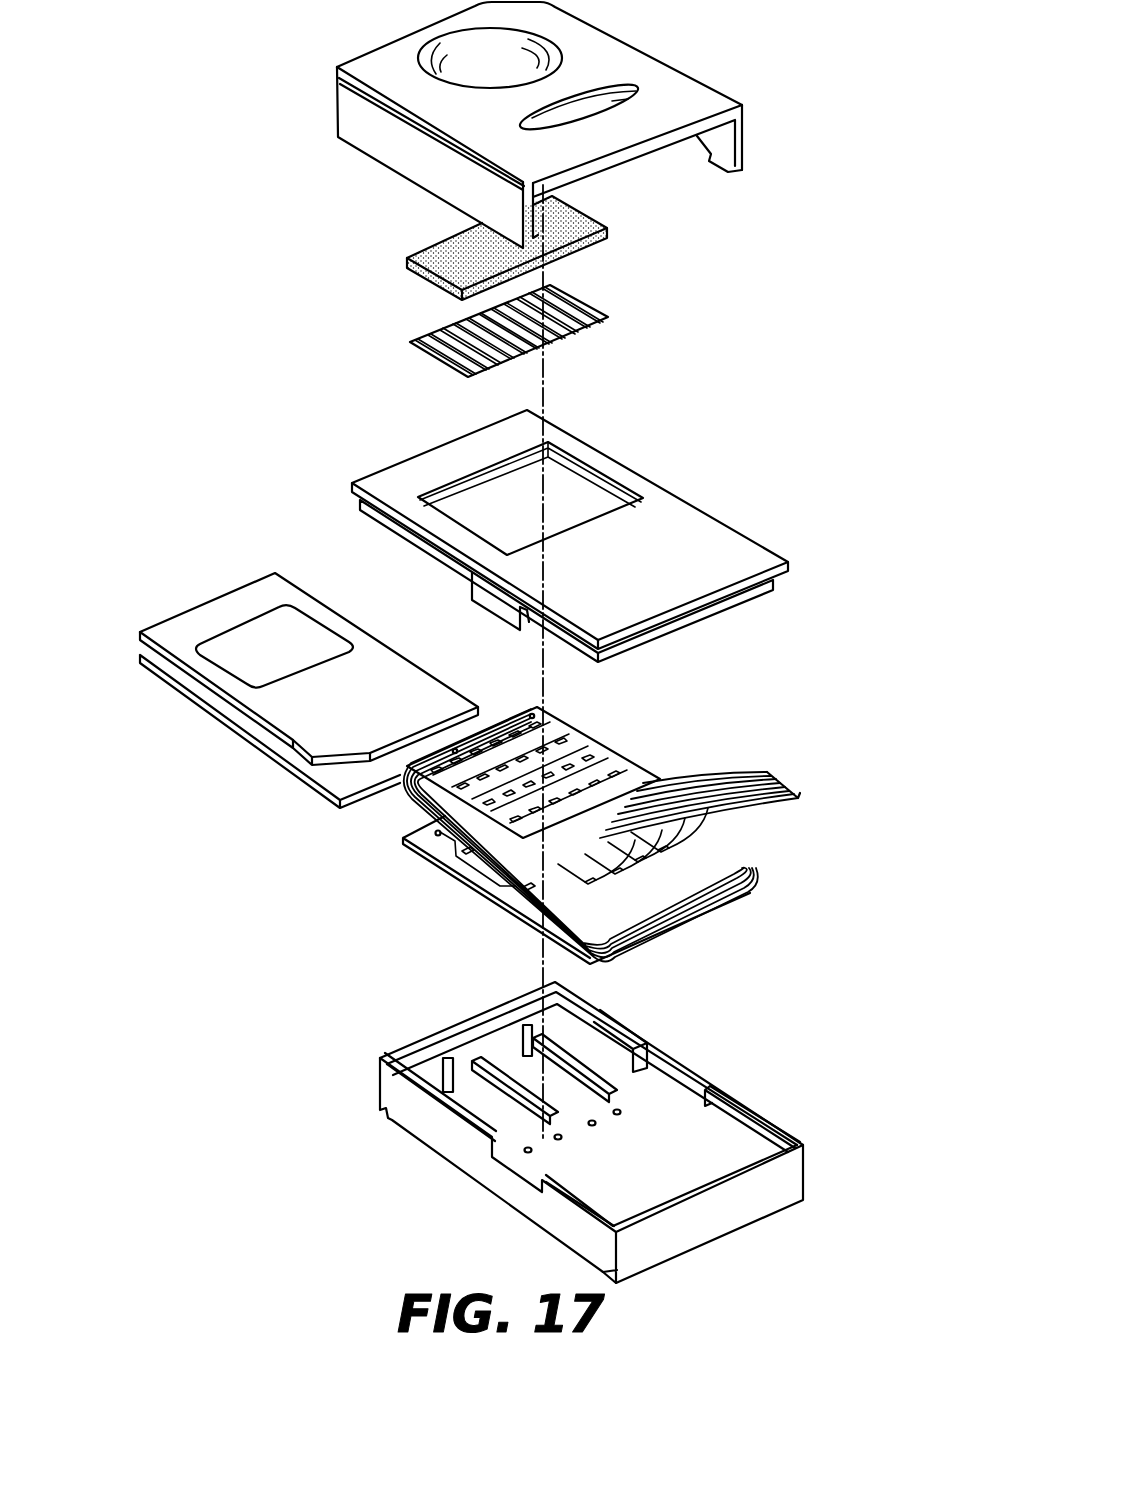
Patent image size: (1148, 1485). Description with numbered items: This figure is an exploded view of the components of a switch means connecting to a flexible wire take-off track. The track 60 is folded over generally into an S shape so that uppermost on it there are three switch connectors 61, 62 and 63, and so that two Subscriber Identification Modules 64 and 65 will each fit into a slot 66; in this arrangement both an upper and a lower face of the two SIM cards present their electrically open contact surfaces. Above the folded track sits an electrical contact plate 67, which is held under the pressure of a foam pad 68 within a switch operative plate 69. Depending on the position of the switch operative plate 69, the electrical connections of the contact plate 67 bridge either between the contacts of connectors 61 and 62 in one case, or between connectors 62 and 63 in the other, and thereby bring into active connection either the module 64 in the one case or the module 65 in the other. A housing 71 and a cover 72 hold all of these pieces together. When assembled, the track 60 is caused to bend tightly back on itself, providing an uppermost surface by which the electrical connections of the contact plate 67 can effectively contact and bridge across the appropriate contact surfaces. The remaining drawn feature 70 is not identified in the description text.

The track 60 is at (620, 828).
The switch connector 61 is at (570, 733).
The switch connector 62 is at (623, 772).
The switch connector 63 is at (647, 776).
The Subscriber Identification Module 64 is at (295, 742).
The Subscriber Identification Module 65 is at (335, 797).
The slot 66 is at (508, 885).
The electrical contact plate 67 is at (575, 327).
The foam pad 68 is at (607, 239).
The switch operative plate 69 is at (677, 507).
The strip 70 is at (547, 342).
The housing 71 is at (800, 1173).
The cover 72 is at (744, 150).